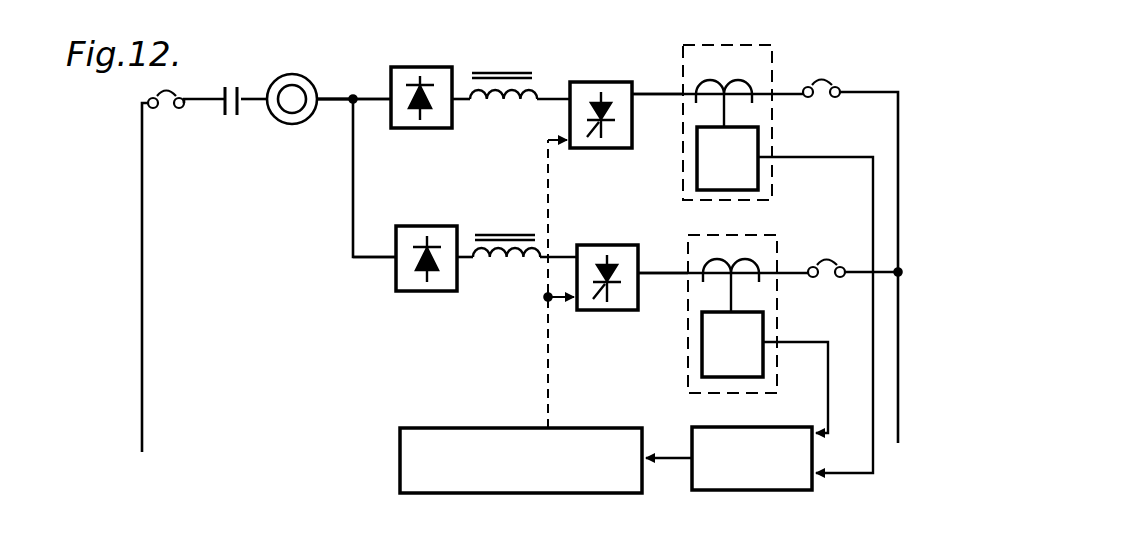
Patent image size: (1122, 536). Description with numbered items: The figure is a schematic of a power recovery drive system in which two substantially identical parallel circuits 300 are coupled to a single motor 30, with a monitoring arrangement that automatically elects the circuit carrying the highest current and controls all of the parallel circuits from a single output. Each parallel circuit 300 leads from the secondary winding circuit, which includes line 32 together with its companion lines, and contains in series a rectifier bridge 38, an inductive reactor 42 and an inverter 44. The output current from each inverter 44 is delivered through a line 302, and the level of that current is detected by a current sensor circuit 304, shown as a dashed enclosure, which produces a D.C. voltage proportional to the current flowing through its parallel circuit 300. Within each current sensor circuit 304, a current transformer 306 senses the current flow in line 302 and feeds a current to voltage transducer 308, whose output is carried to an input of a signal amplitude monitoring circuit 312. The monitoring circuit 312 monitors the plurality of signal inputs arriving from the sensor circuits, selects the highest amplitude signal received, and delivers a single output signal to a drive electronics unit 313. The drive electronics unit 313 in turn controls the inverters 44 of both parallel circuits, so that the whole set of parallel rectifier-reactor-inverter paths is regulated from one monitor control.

The alternating current source 30 is at (284, 118).
The line 32 is at (333, 88).
The rectifier bridge 38 is at (413, 58).
The inductive reactor 42 is at (507, 68).
The inverter 44 is at (597, 78).
The parallel circuit 300 is at (467, 50).
The line 302 is at (651, 88).
The current sensor circuit 304 is at (781, 64).
The current transformer 306 is at (710, 76).
The current to voltage transducer 308 is at (697, 166).
The signal amplitude monitoring circuit 312 is at (770, 474).
The drive electronics unit 313 is at (540, 474).